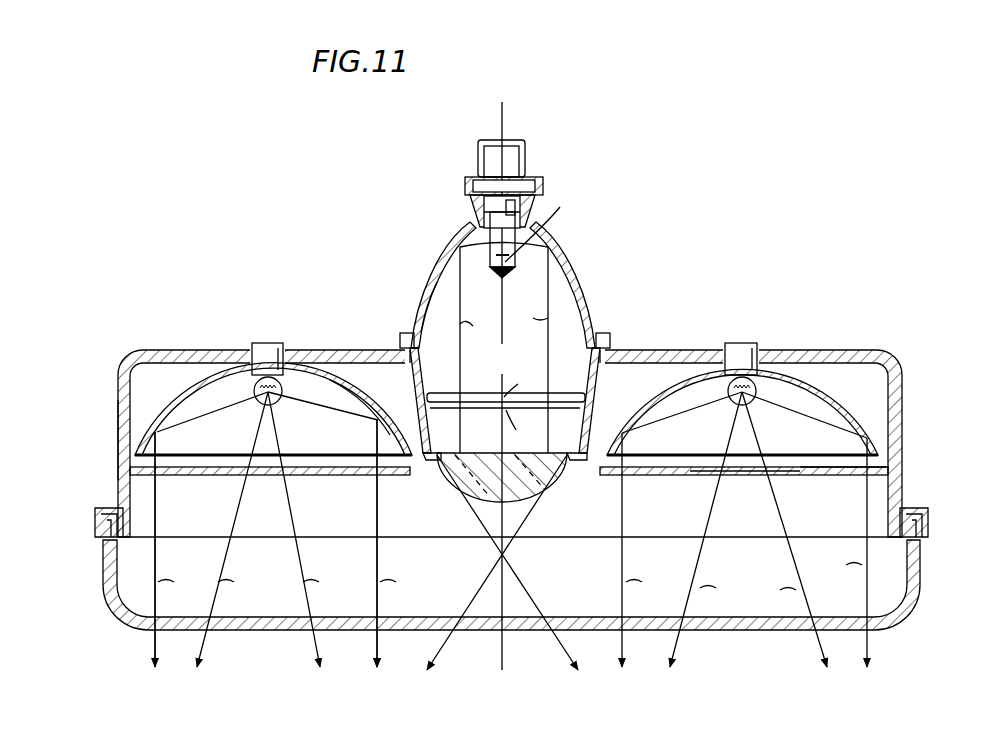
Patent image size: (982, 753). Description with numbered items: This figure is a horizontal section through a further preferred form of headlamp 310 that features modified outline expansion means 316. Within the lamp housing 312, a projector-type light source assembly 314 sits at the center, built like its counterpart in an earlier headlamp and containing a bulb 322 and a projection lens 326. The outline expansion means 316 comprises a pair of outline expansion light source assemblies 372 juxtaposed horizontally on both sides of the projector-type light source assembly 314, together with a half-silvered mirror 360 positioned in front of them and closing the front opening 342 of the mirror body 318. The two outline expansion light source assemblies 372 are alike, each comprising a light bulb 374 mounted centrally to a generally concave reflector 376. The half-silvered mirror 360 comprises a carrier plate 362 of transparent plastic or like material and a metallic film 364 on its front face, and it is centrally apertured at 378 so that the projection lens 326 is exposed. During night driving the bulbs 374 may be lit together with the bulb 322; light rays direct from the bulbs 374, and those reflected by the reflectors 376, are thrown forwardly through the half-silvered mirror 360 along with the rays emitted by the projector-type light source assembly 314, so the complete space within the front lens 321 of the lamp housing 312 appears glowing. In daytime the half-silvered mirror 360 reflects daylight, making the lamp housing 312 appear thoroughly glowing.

The headlamp 310 is at (509, 385).
The lamp housing 312 is at (123, 366).
The projector-type light source assembly 314 is at (590, 285).
The outline expansion means 316 is at (208, 478).
The mirror body 318 is at (118, 430).
The front lens 321 is at (268, 632).
The bulb 322 is at (478, 226).
The projection lens 326 is at (548, 490).
The front opening 342 is at (118, 555).
The half-silvered mirror 360 is at (672, 478).
The carrier plate 362 is at (820, 478).
The metallic film 364 is at (752, 478).
The outline expansion light source assemblies 372 is at (185, 378).
The light bulb 374 is at (275, 405).
The reflector 376 is at (352, 382).
The central aperture 378 is at (438, 468).